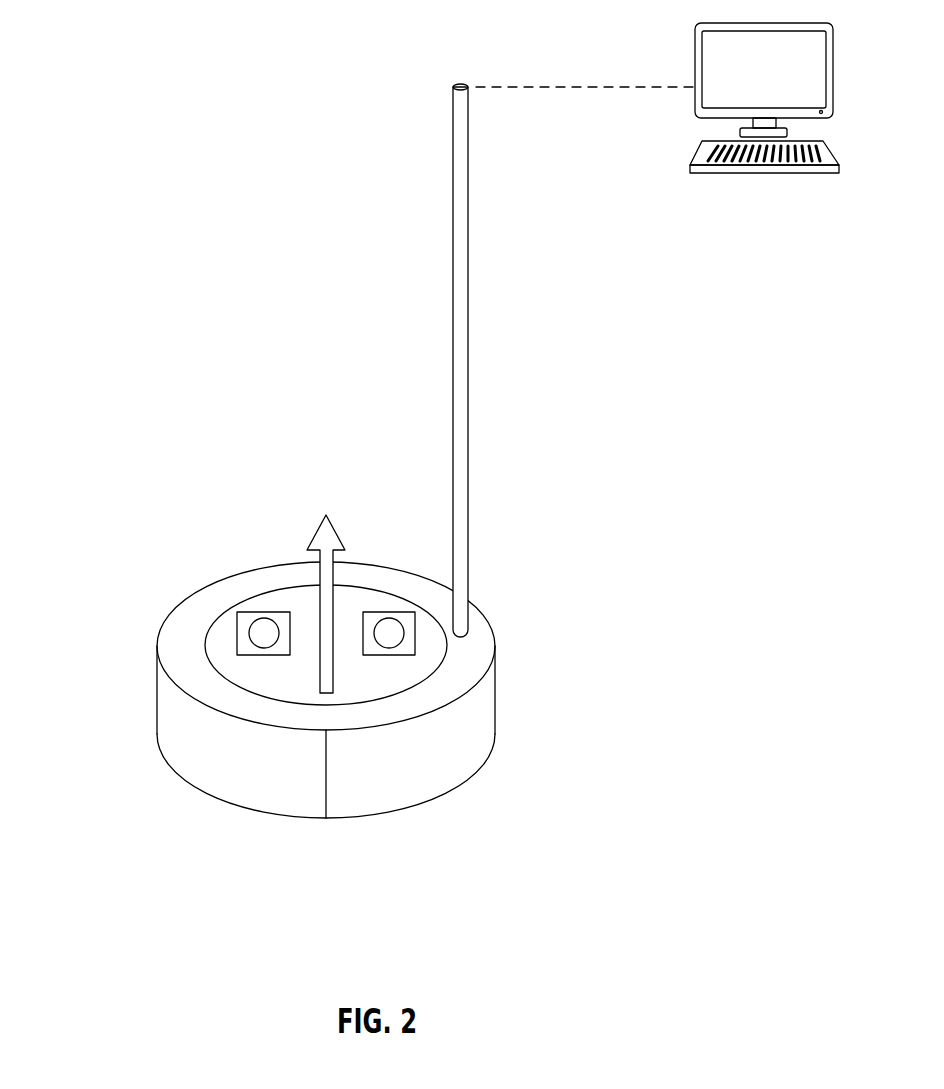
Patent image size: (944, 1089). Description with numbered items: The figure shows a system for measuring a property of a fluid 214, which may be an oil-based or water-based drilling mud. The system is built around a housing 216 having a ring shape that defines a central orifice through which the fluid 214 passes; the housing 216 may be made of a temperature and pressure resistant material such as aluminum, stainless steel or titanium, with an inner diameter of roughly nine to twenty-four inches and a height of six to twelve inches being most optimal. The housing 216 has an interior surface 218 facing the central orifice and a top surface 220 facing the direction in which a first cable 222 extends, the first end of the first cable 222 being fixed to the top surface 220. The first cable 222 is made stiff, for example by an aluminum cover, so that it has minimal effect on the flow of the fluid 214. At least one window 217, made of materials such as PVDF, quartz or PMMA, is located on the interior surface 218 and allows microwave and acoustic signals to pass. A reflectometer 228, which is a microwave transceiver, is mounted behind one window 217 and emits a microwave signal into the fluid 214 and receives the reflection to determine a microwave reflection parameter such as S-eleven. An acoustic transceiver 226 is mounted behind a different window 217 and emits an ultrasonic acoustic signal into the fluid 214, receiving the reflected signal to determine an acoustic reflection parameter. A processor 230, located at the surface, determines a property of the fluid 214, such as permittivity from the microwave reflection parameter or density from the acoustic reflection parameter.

The fluid 214 is at (346, 508).
The housing 216 is at (146, 731).
The window 217 is at (372, 693).
The interior surface 218 is at (216, 655).
The top surface 220 is at (203, 607).
The first cable 222 is at (468, 455).
The acoustic transceiver 226 is at (264, 655).
The reflectometer 228 is at (389, 655).
The processor 230 is at (788, 86).